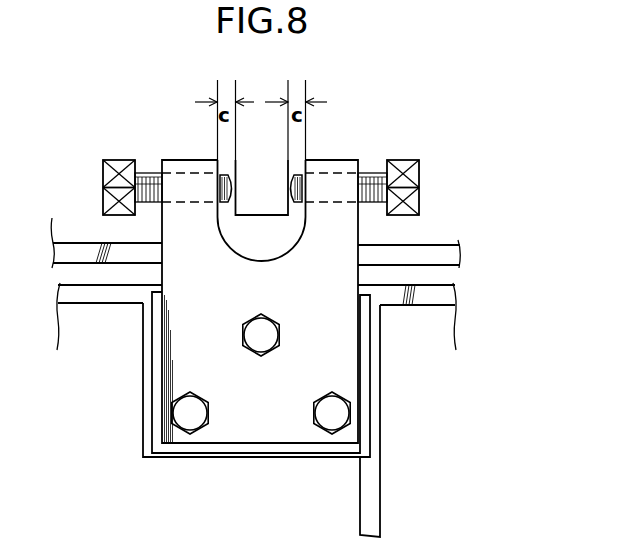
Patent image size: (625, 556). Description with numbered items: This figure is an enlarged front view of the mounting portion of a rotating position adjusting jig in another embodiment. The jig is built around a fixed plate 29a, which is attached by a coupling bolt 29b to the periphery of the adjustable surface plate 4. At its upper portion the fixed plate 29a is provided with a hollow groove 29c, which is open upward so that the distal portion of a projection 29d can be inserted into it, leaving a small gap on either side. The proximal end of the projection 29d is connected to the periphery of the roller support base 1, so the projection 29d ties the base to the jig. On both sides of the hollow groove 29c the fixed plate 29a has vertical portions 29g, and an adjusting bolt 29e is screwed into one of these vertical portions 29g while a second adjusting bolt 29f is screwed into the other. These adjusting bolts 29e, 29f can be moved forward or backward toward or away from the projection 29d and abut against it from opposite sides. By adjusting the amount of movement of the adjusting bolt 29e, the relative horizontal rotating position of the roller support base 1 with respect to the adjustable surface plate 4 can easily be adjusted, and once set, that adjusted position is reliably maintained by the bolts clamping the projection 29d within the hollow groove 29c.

The roller support base 1 is at (443, 250).
The adjustable surface plate 4 is at (438, 292).
The fixed plate 29a is at (258, 417).
The coupling bolt 29b is at (184, 426).
The hollow groove 29c is at (288, 245).
The projection 29d is at (278, 172).
The adjusting bolt 29e is at (150, 173).
The adjusting bolt 29f is at (409, 164).
The vertical portions 29g is at (168, 220).